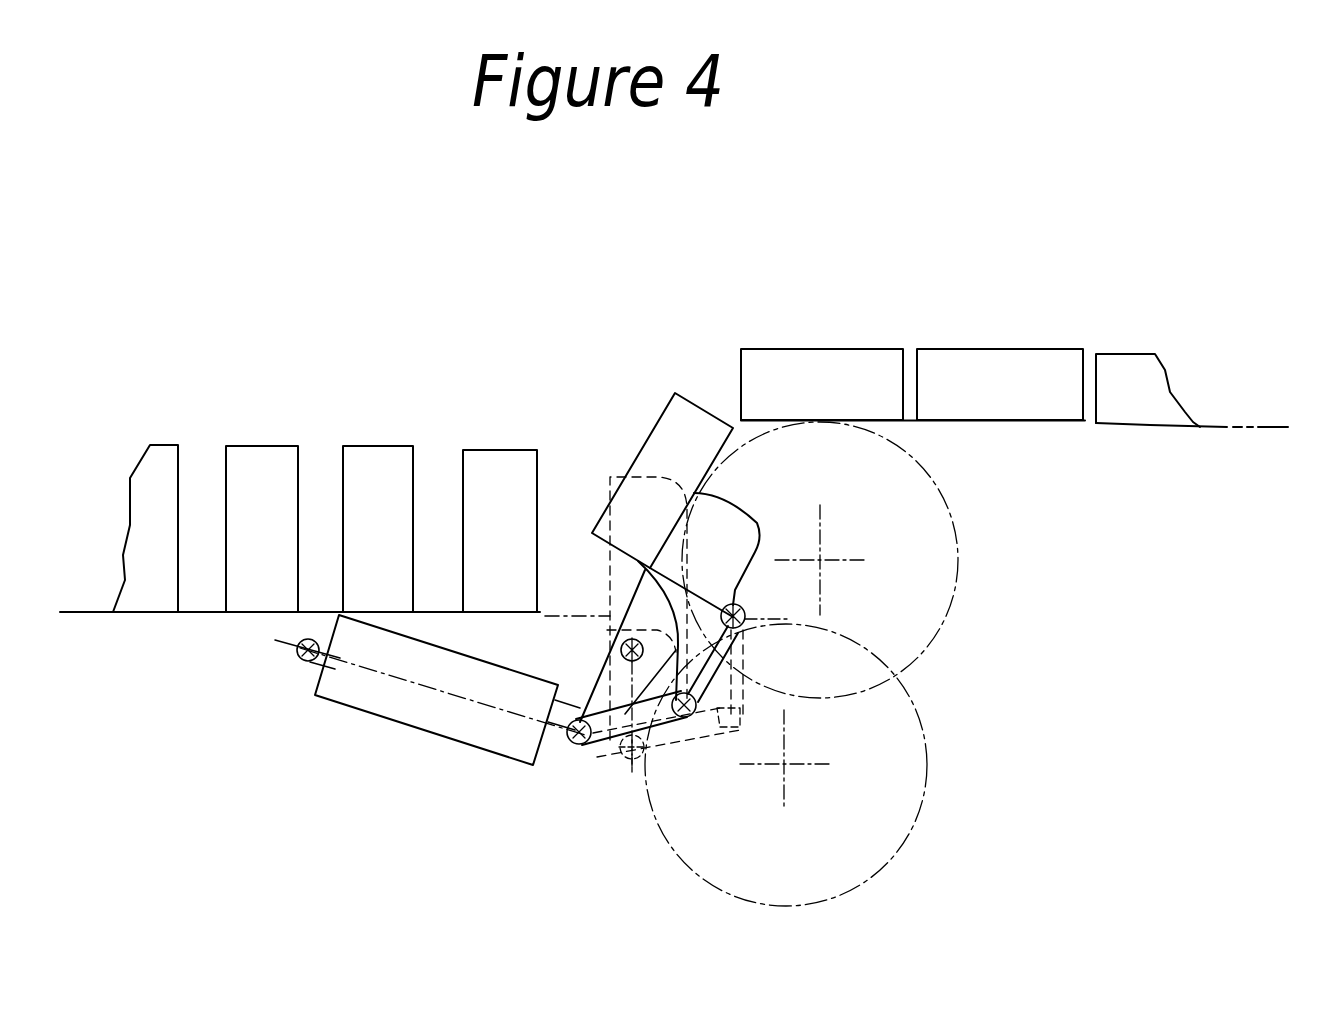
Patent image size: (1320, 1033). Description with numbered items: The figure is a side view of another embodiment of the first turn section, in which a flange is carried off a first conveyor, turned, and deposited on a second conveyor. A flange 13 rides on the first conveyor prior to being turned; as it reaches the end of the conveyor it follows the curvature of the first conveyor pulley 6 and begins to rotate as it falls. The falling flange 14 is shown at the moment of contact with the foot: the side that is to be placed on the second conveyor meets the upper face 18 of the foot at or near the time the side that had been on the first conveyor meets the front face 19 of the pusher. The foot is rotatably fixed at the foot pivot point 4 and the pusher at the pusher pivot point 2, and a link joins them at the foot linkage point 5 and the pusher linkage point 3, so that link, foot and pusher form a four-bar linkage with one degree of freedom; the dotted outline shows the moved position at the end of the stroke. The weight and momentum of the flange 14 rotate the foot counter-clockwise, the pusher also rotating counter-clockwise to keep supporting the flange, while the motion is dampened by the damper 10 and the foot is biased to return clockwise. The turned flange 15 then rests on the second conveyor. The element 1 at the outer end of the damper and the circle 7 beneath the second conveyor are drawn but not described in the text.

The pivot 1 is at (304, 654).
The pusher pivot point 2 is at (620, 648).
The pusher linkage point 3 is at (578, 745).
The foot pivot point 4 is at (743, 615).
The foot linkage point 5 is at (681, 716).
The first conveyor pulley 6 is at (960, 563).
The wheel 7 is at (920, 792).
The damper 10 is at (393, 712).
The flange 13 is at (813, 350).
The flange 14 is at (660, 418).
The flange 15 is at (483, 448).
The upper face 18 is at (642, 570).
The front face 19 is at (678, 528).